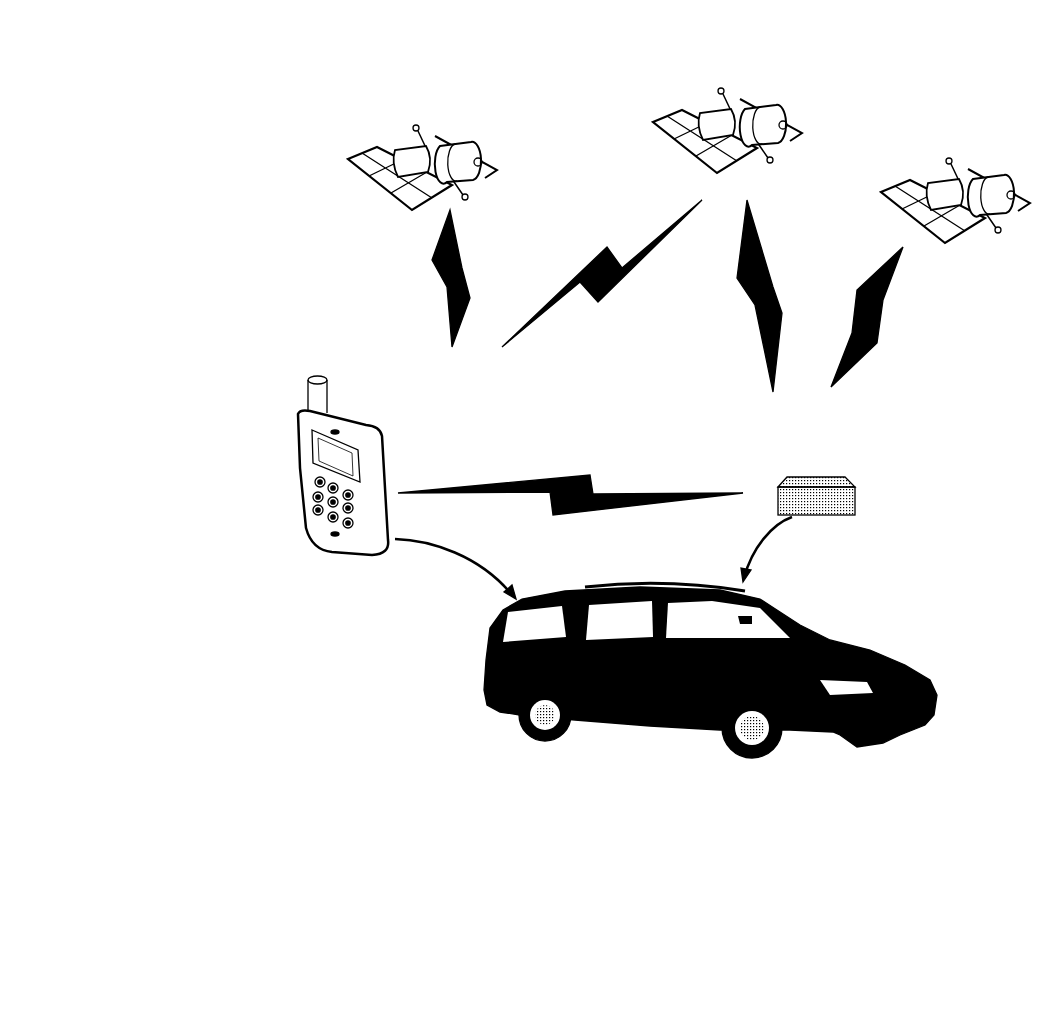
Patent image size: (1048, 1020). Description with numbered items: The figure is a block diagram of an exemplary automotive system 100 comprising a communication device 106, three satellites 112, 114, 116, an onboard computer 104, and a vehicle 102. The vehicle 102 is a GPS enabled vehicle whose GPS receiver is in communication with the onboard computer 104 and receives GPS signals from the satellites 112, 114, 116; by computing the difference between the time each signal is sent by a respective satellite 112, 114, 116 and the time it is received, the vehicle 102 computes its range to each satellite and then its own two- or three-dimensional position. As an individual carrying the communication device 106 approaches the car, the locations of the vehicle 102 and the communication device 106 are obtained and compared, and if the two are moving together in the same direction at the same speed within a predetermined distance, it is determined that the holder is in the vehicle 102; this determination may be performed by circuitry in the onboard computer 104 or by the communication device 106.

The system 100 is at (289, 111).
The vehicle 102 is at (1002, 693).
The onboard computer 104 is at (830, 463).
The communication device 106 is at (195, 487).
The satellite 112 is at (472, 100).
The satellite 114 is at (778, 66).
The satellite 116 is at (1005, 135).